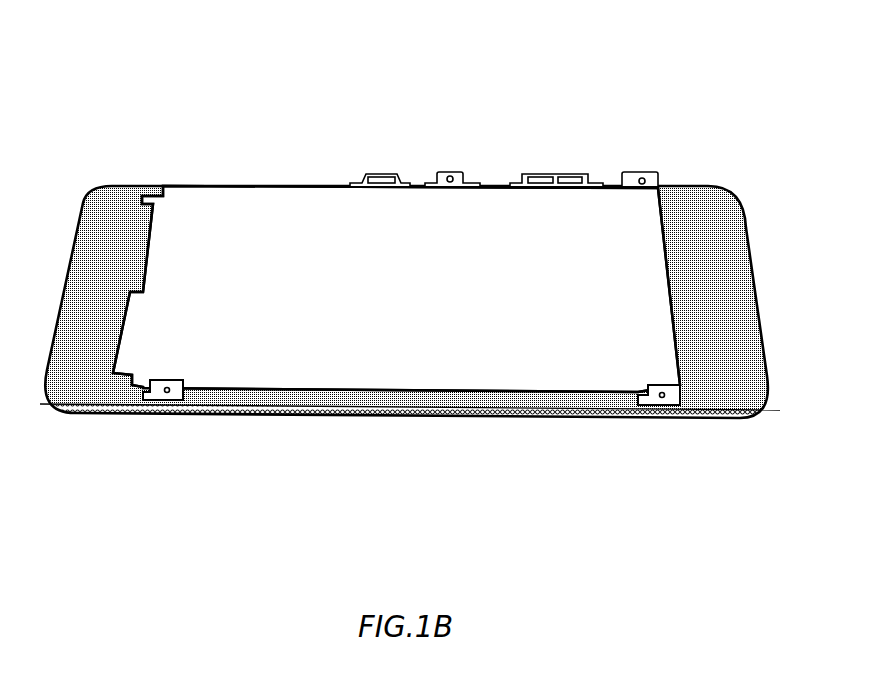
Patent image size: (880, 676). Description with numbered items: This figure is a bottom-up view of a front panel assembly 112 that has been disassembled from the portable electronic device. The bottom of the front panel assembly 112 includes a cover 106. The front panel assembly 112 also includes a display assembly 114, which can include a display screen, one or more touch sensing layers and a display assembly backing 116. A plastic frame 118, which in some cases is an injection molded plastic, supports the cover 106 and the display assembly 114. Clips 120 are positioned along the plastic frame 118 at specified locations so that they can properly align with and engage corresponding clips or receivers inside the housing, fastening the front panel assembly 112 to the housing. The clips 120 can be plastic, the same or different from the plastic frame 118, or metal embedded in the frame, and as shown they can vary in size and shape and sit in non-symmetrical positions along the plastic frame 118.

The cover 106 is at (387, 433).
The front panel assembly 112 is at (411, 260).
The display assembly 114 is at (258, 223).
The display assembly backing 116 is at (515, 332).
The plastic frame 118 is at (703, 221).
The clips 120 is at (381, 169).